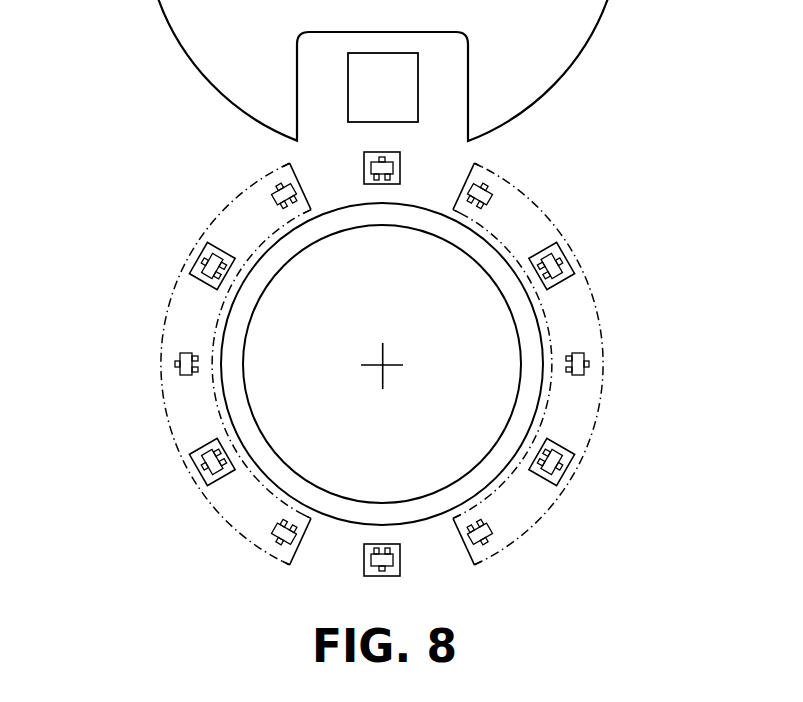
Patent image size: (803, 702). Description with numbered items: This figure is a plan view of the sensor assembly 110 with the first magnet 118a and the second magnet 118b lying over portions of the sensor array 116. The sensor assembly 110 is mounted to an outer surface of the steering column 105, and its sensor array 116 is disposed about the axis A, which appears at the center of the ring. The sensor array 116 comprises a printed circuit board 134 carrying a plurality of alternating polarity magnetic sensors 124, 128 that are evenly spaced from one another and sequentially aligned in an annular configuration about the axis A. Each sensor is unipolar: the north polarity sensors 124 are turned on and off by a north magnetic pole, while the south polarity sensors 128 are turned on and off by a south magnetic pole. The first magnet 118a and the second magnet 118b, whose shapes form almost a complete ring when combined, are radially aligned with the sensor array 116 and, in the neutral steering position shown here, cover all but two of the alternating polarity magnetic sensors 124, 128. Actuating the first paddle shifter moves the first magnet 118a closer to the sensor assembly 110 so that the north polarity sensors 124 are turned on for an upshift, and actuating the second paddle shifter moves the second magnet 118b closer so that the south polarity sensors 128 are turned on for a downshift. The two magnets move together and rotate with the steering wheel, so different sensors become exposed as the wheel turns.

The steering column 105 is at (512, 415).
The sensor assembly 110 is at (530, 552).
The sensor array 116 is at (115, 142).
The first magnet 118a is at (230, 202).
The second magnet 118b is at (520, 190).
The north polarity sensor 124 is at (589, 365).
The south polarity sensor 128 is at (567, 246).
The printed circuit board 134 is at (312, 177).
The axis A is at (385, 363).